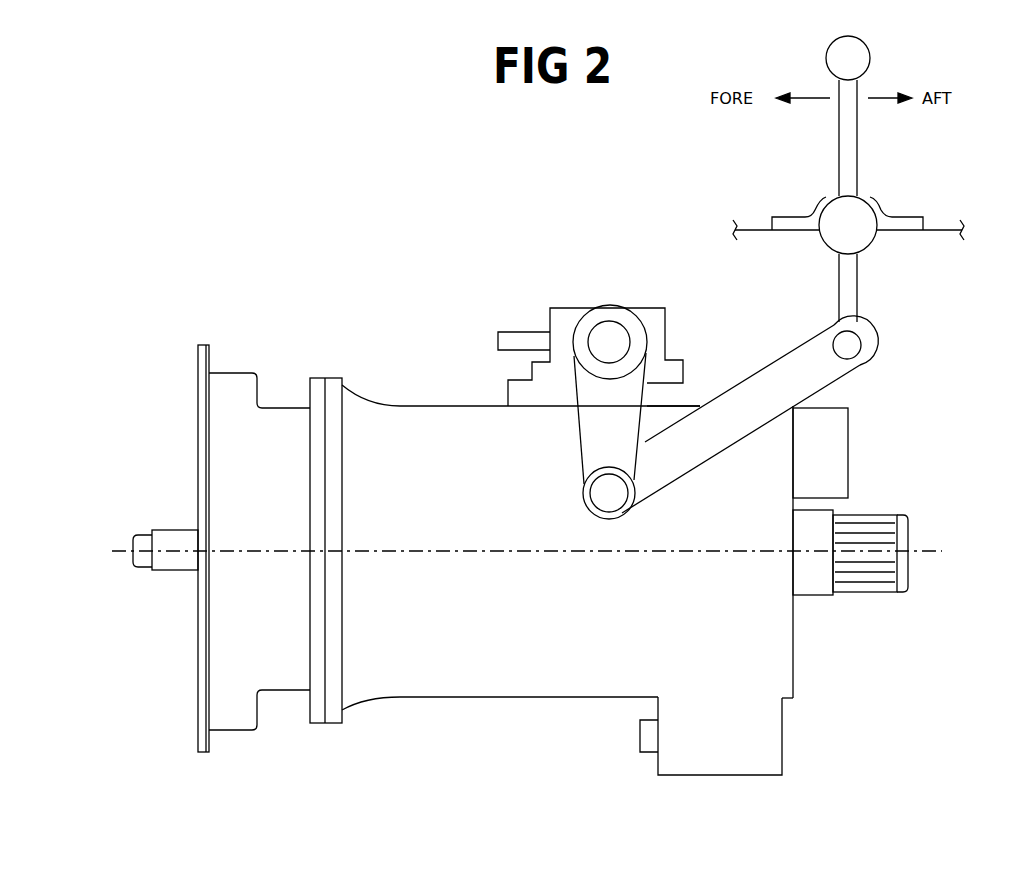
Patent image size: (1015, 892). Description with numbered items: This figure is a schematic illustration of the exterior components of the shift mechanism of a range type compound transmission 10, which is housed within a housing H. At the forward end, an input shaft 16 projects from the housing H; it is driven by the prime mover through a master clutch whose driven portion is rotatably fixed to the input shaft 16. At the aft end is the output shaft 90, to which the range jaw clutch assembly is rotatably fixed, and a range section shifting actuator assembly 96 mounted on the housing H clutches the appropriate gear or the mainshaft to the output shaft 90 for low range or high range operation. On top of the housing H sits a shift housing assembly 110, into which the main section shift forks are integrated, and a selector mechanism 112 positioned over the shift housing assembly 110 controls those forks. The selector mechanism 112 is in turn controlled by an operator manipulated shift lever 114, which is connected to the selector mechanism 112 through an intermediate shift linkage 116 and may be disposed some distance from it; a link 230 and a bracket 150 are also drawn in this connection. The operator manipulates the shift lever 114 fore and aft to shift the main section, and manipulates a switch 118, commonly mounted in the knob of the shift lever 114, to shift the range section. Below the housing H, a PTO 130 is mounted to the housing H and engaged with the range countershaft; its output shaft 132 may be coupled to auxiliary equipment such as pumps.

The range type compound transmission 10 is at (275, 264).
The input shaft 16 is at (177, 527).
The output shaft 90 is at (867, 594).
The range section shifting actuator assembly 96 is at (848, 450).
The shift housing assembly 110 is at (508, 383).
The selector mechanism 112 is at (667, 308).
The shift lever 114 is at (858, 143).
The intermediate shift linkage 116 is at (862, 368).
The switch 118 is at (872, 52).
The PTO 130 is at (782, 738).
The output shaft 132 is at (640, 731).
The support bracket 150 is at (513, 332).
The link rod 230 is at (664, 352).
The housing H is at (793, 662).